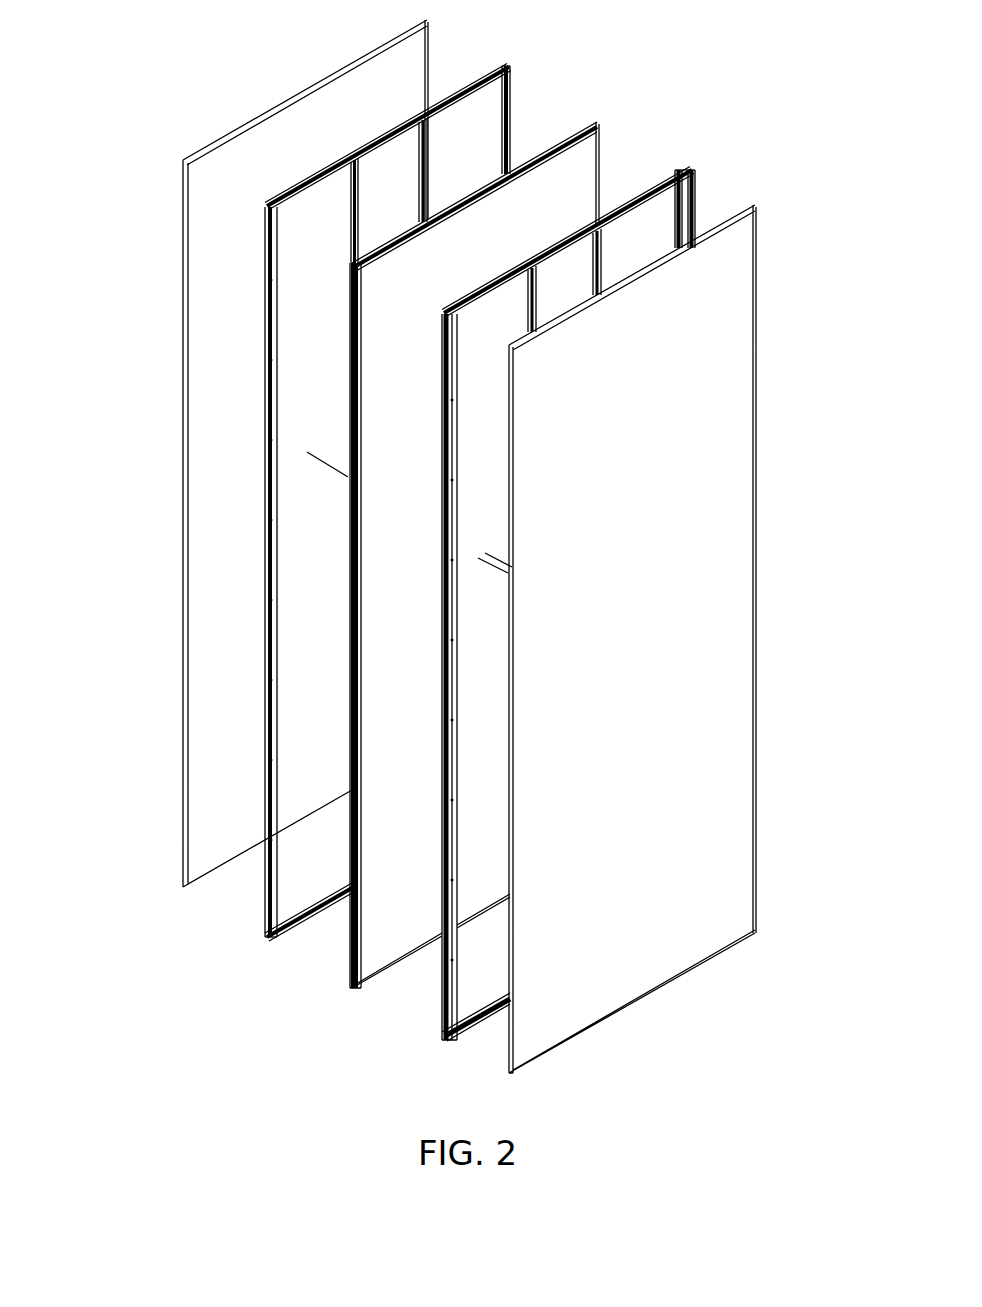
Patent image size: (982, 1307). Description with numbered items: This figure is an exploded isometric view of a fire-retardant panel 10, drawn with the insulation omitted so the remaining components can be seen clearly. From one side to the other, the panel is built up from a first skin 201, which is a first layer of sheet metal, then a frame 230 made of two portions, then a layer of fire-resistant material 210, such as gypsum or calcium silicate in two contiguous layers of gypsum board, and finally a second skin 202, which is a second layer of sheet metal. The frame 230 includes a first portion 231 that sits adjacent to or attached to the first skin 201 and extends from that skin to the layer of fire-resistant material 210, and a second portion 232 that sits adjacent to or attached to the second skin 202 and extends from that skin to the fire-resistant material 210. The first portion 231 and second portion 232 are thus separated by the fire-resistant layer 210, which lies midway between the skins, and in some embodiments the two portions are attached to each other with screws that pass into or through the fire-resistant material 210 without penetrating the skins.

The fire-retardant panel 10 is at (428, 564).
The first skin 201 is at (227, 162).
The second skin 202 is at (638, 948).
The layer of fire-resistant material 210 is at (600, 133).
The frame 230 is at (457, 95).
The first portion of the frame 231 is at (512, 80).
The second portion of the frame 232 is at (680, 175).